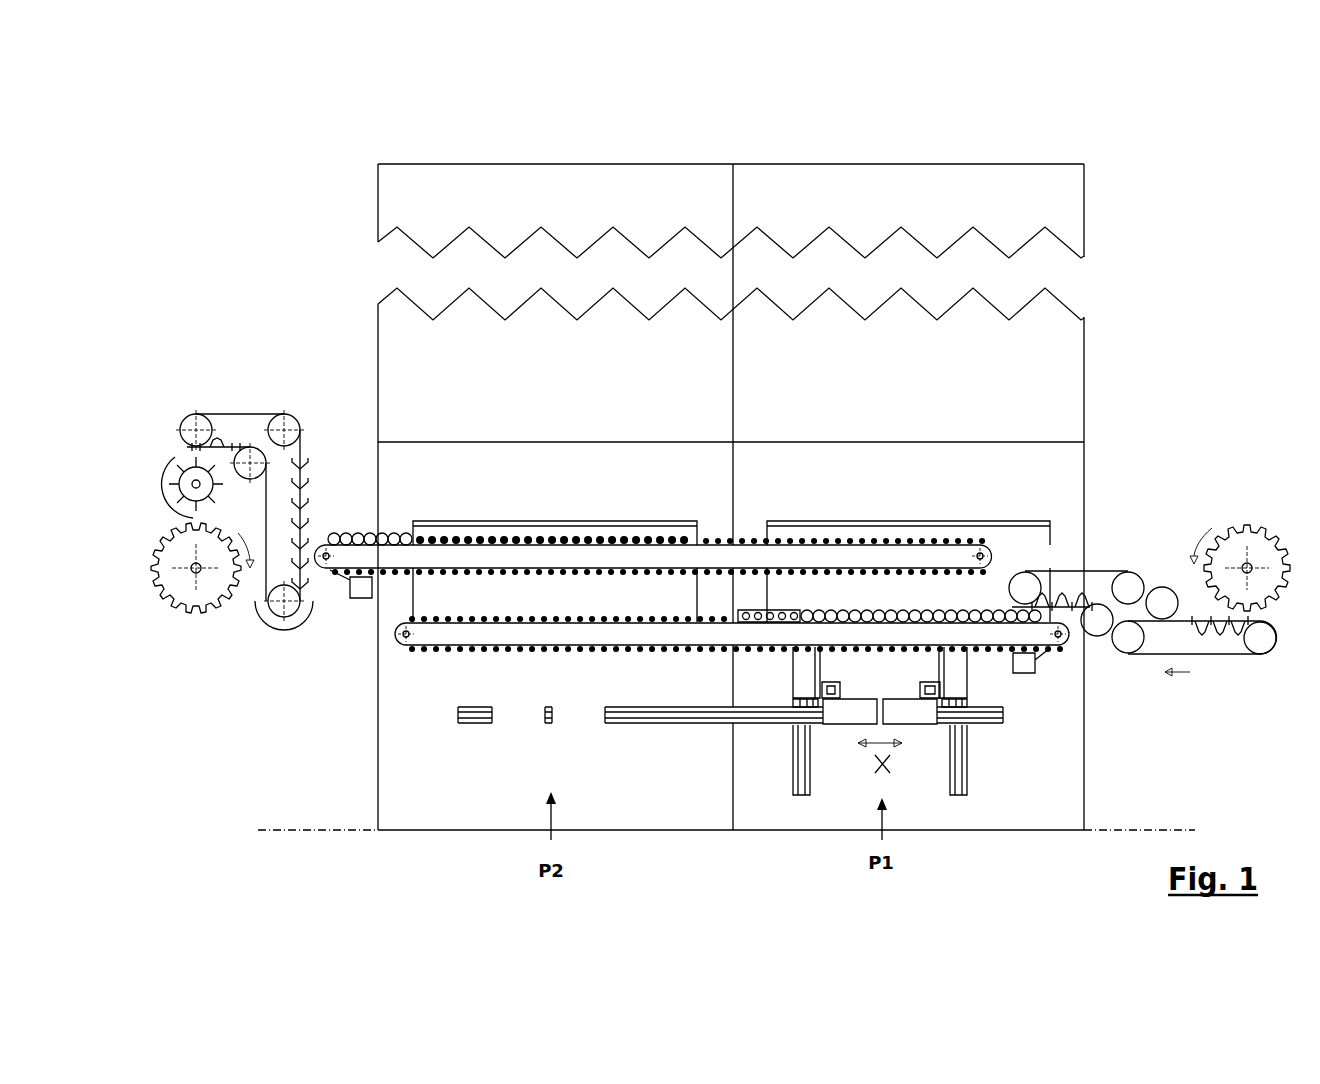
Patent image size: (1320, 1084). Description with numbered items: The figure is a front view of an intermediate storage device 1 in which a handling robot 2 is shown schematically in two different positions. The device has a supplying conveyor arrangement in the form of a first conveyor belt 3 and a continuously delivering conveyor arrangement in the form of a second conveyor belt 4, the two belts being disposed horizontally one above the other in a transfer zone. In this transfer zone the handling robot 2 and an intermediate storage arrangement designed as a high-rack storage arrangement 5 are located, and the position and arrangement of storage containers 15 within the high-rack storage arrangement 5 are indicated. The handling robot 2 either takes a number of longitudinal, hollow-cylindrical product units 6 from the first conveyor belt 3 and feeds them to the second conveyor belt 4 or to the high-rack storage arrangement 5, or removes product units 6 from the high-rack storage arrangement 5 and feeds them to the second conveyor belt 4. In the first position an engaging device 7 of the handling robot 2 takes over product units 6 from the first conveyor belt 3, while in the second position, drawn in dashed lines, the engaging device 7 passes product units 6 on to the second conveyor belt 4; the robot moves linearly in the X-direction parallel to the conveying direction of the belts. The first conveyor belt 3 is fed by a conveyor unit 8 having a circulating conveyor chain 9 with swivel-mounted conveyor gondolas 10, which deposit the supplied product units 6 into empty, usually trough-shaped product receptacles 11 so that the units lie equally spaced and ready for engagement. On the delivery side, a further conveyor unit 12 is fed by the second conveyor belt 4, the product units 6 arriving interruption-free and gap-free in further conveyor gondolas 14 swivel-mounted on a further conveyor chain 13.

The intermediate storage device 1 is at (1127, 314).
The handling robot 2 is at (1028, 728).
The first conveyor belt 3 is at (725, 642).
The second conveyor belt 4 is at (738, 552).
The high-rack storage arrangement 5 is at (748, 366).
The product units 6 is at (990, 608).
The engaging device 7 is at (790, 600).
The conveyor unit 8 is at (1209, 505).
The conveyor chain 9 is at (1222, 657).
The conveyor gondolas 10 is at (1197, 628).
The product receptacles 11 is at (430, 613).
The further conveyor unit 12 is at (194, 391).
The further conveyor chain 13 is at (252, 413).
The further conveyor gondolas 14 is at (304, 460).
The storage containers 15 is at (913, 522).